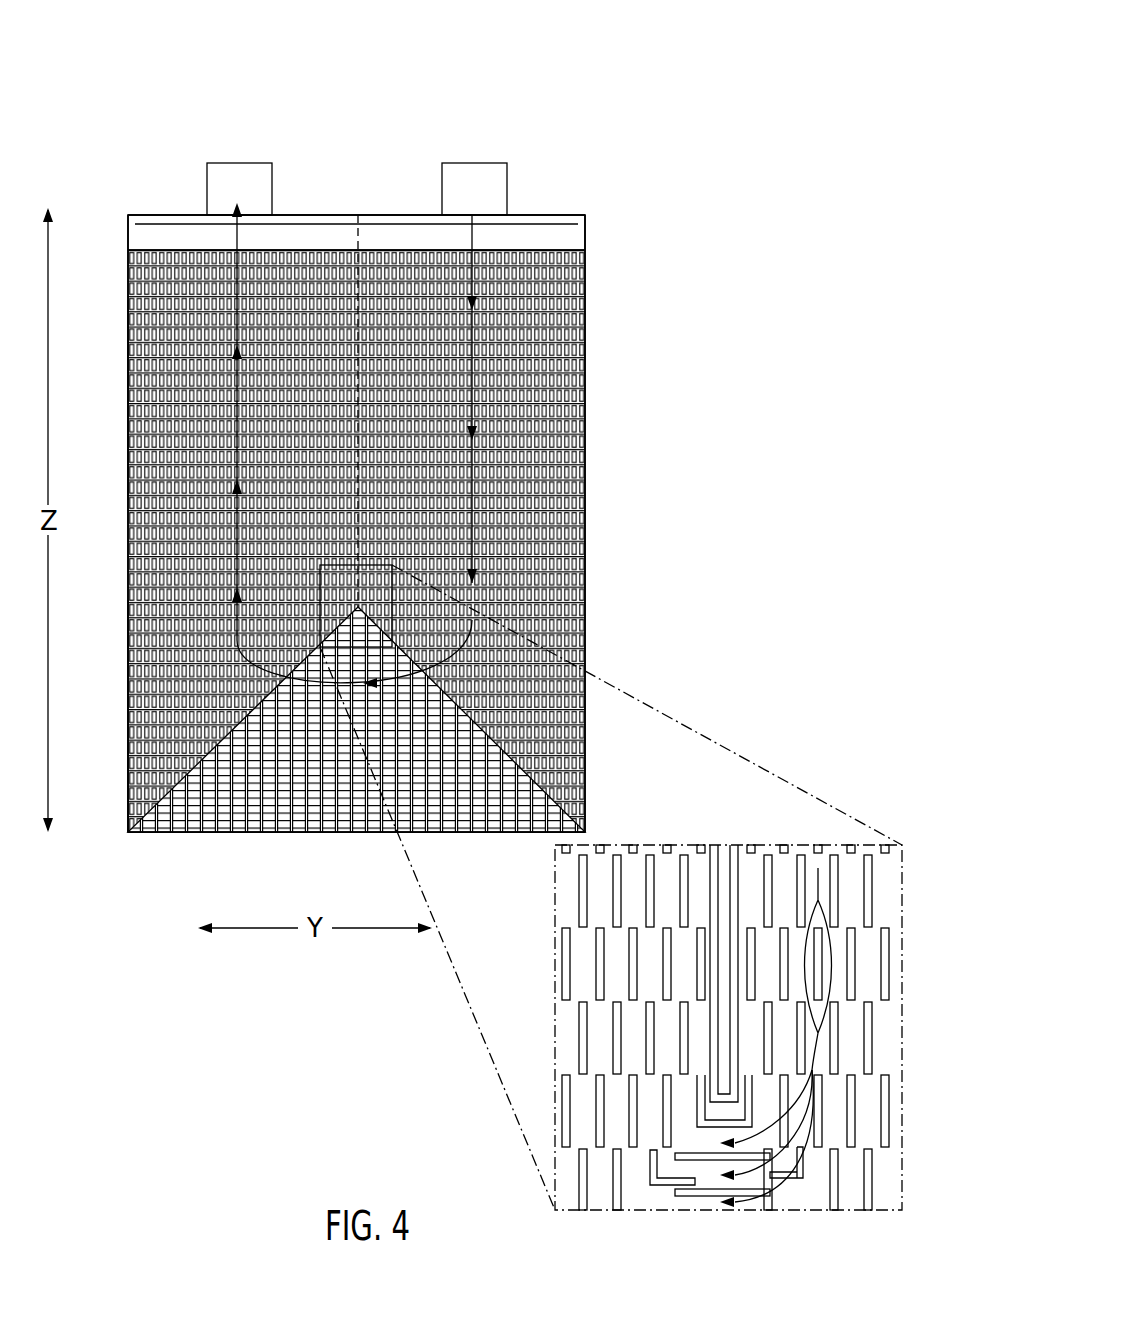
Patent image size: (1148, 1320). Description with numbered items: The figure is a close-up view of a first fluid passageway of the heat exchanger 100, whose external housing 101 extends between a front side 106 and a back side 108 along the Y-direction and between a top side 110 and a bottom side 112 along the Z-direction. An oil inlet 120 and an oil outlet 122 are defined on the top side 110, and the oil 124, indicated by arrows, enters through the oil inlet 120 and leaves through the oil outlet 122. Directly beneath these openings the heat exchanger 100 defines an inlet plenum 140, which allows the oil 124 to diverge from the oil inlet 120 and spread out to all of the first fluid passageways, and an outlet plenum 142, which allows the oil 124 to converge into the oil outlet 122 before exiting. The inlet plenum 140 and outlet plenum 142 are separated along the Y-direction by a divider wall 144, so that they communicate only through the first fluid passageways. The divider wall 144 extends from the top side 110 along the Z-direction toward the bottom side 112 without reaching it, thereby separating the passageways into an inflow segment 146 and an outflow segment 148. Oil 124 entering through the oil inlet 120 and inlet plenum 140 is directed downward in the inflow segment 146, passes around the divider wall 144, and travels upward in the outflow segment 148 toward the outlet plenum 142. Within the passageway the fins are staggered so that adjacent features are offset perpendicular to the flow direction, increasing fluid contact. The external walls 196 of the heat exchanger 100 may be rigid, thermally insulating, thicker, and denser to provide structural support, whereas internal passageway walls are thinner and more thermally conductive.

The heat exchanger 100 is at (687, 76).
The external housing 101 is at (587, 635).
The front side 106 is at (118, 271).
The back side 108 is at (598, 348).
The top side 110 is at (547, 204).
The bottom side 112 is at (158, 845).
The oil inlet 120 is at (476, 150).
The oil outlet 122 is at (241, 150).
The oil 124 is at (237, 405).
The inlet plenum 140 is at (576, 240).
The outlet plenum 142 is at (145, 238).
The divider wall 144 is at (360, 237).
The inflow segment 146 is at (566, 568).
The outflow segment 148 is at (145, 395).
The external walls 196 is at (126, 690).